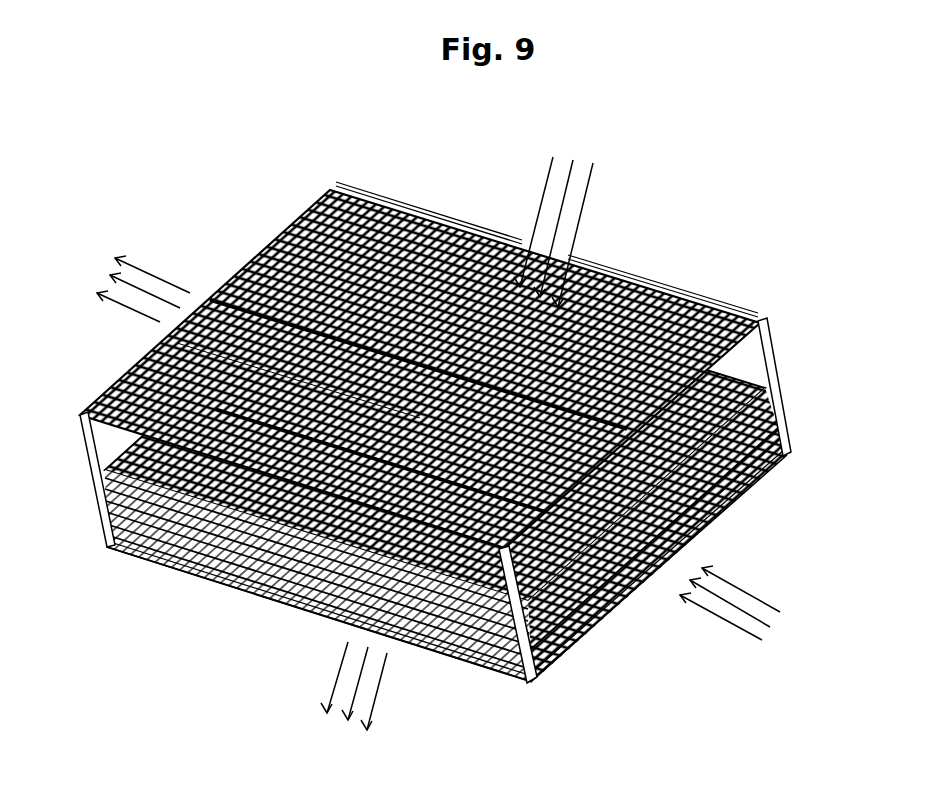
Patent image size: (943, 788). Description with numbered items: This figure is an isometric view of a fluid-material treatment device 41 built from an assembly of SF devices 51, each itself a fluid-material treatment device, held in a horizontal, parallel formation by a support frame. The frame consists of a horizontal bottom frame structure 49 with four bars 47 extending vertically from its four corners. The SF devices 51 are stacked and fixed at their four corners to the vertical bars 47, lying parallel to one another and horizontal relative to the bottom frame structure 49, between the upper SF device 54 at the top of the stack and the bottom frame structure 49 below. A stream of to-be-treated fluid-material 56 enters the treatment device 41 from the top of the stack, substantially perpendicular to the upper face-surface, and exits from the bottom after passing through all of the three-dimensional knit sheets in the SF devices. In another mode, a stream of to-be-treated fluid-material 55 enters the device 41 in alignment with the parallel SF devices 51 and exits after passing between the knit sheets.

The fluid-material treatment device 41 is at (434, 445).
The bars 47 is at (106, 508).
The bottom frame structure 49 is at (300, 598).
The SF devices 51 is at (758, 392).
The upper SF device 54 is at (407, 272).
The stream of to-be-treated fluid-material 55 is at (181, 292).
The stream of to-be-treated fluid-material 56 is at (597, 172).